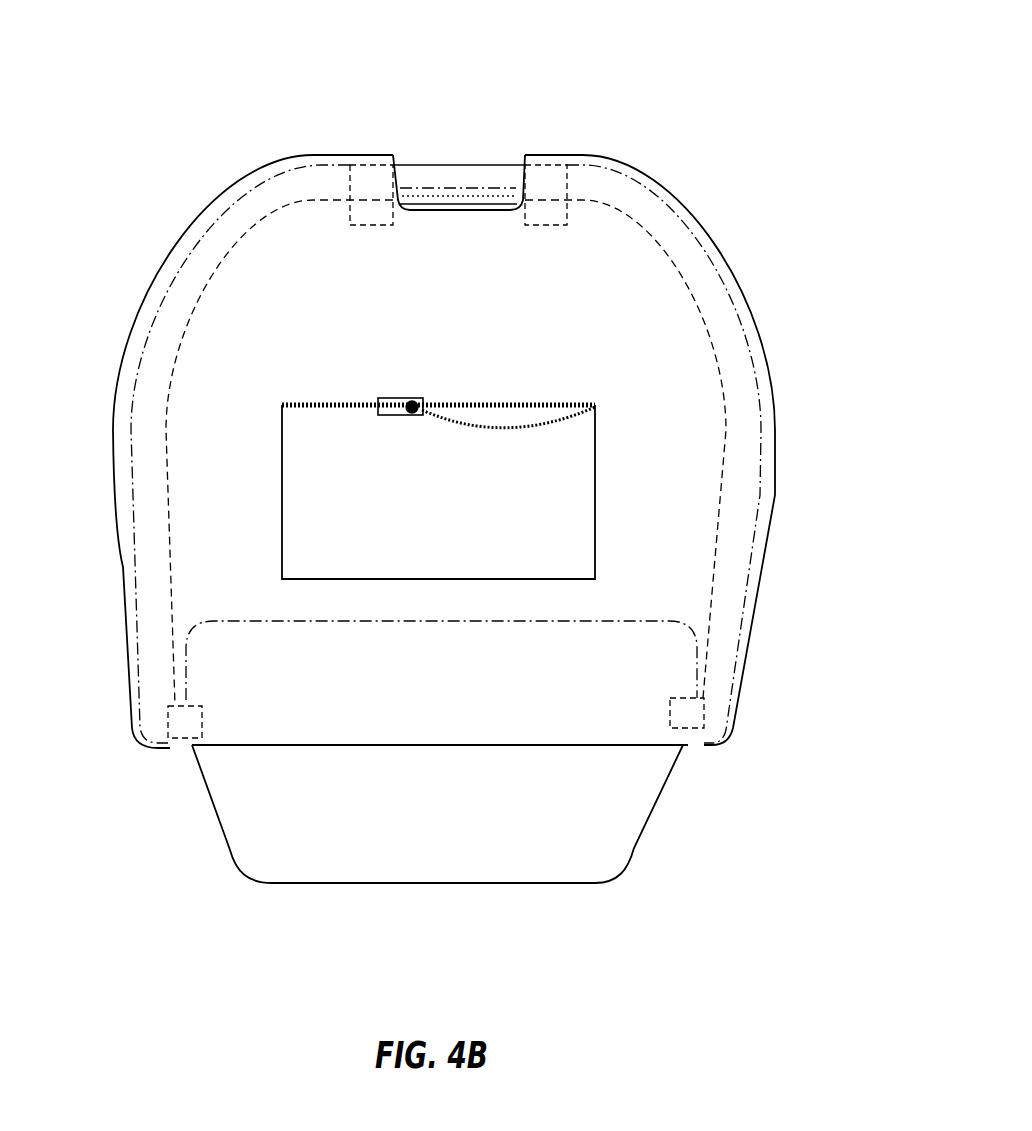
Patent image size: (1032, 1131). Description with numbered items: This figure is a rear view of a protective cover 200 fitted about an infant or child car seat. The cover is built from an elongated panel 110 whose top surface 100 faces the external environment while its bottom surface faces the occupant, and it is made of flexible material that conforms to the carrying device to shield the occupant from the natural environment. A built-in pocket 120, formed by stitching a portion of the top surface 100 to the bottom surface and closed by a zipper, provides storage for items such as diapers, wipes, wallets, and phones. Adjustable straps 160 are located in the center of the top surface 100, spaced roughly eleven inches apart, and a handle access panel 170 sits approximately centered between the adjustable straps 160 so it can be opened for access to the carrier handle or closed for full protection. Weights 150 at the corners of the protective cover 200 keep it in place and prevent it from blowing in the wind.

The protective cover 200 is at (278, 90).
The top surface 100 is at (748, 576).
The elongated panel 110 is at (737, 315).
The built-in pocket 120 is at (352, 468).
The weights 150 is at (168, 722).
The adjustable straps 160 is at (375, 185).
The handle access panel 170 is at (438, 170).